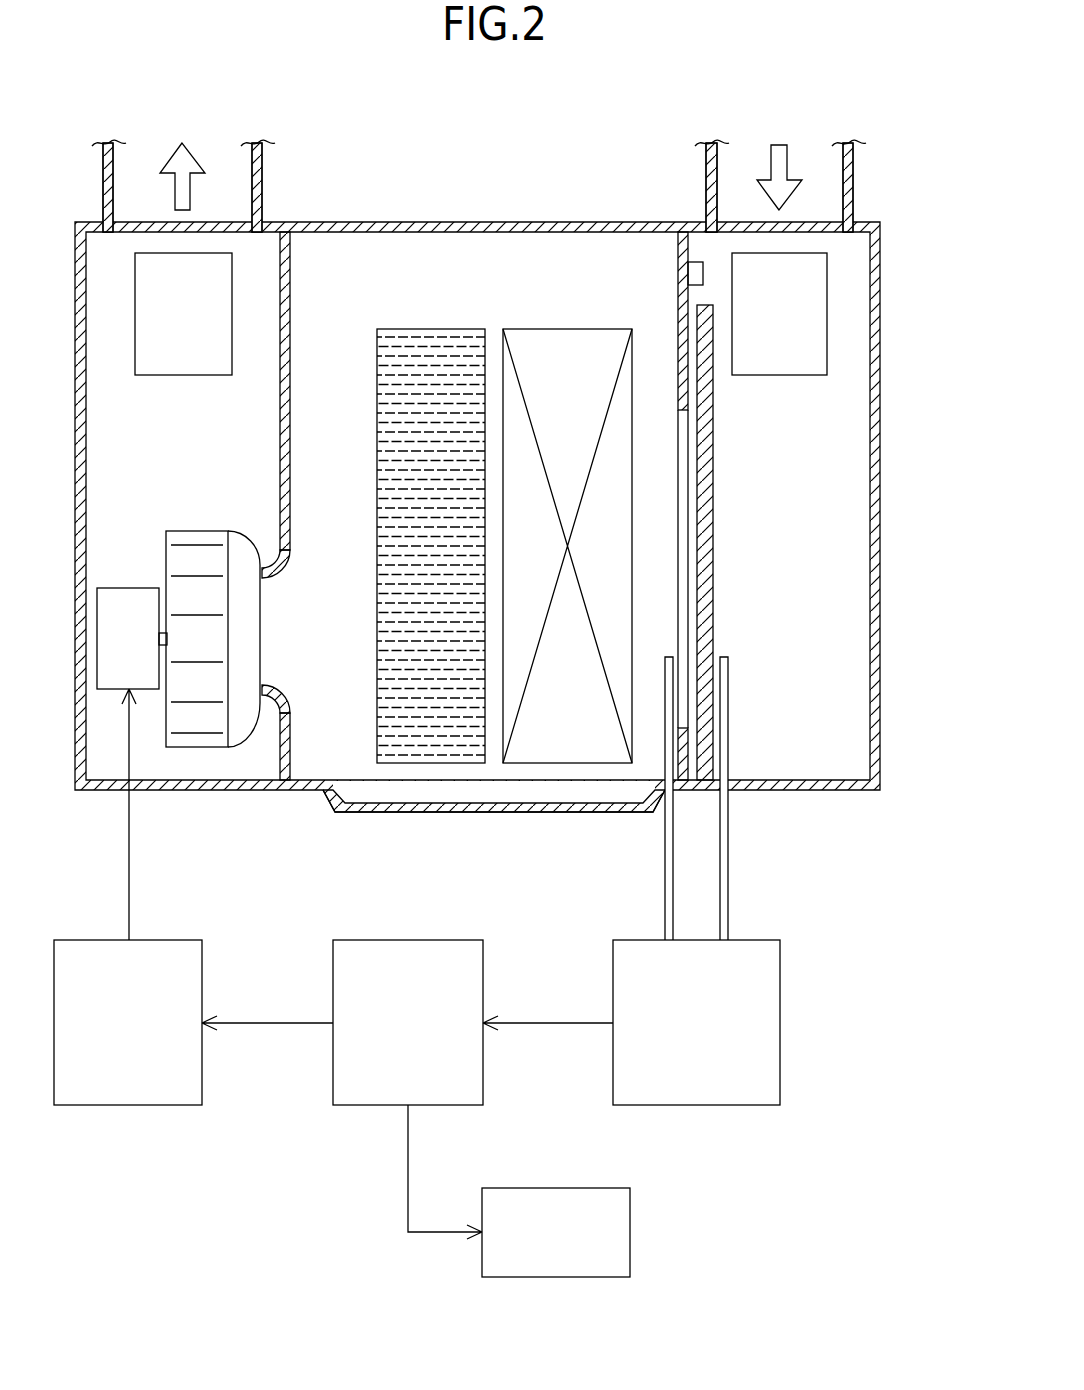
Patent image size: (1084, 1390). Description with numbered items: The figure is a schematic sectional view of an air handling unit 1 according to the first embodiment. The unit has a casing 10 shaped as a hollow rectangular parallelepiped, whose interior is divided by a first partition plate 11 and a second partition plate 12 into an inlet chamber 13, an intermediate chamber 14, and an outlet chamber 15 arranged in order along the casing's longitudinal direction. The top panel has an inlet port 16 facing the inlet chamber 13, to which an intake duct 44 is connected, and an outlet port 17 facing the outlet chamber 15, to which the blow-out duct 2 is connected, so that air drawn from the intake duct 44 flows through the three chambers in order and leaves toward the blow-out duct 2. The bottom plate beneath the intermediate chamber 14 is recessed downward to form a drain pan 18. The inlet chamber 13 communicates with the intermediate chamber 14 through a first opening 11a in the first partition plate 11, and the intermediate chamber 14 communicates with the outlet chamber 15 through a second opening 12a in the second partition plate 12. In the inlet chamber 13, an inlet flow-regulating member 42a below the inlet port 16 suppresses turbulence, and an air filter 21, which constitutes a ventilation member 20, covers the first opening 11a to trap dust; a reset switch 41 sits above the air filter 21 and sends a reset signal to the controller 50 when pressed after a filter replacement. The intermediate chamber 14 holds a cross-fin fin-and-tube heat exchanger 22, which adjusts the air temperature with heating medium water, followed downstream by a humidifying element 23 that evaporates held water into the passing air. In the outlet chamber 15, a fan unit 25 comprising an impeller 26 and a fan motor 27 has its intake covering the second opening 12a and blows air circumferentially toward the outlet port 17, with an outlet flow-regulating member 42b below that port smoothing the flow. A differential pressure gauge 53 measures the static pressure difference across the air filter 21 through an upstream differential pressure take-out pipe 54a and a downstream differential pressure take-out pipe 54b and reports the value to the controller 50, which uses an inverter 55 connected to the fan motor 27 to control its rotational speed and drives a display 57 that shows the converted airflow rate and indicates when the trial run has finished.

The air handling unit 1 is at (897, 109).
The blow-out duct 2 is at (103, 180).
The casing 10 is at (880, 420).
The first partition plate 11 is at (678, 255).
The first opening 11a is at (688, 590).
The second partition plate 12 is at (278, 337).
The second opening 12a is at (282, 633).
The inlet chamber 13 is at (780, 757).
The intermediate chamber 14 is at (650, 757).
The outlet chamber 15 is at (140, 760).
The inlet port 16 is at (750, 222).
The outlet port 17 is at (147, 222).
The drain pan 18 is at (455, 813).
The ventilation member 20 is at (772, 542).
The air filter 21 is at (715, 470).
The heat exchanger 22 is at (545, 329).
The humidifying element 23 is at (377, 455).
The fan unit 25 is at (205, 531).
The impeller 26 is at (178, 531).
The fan motor 27 is at (130, 588).
The reset switch 41 is at (697, 262).
The inlet flow-regulating member 42a is at (790, 377).
The outlet flow-regulating member 42b is at (170, 377).
The intake duct 44 is at (853, 175).
The controller 50 is at (360, 1107).
The differential pressure gauge 53 is at (782, 1057).
The upstream differential pressure take-out pipe 54a is at (728, 888).
The downstream differential pressure take-out pipe 54b is at (665, 888).
The inverter 55 is at (125, 1107).
The display 57 is at (550, 1278).